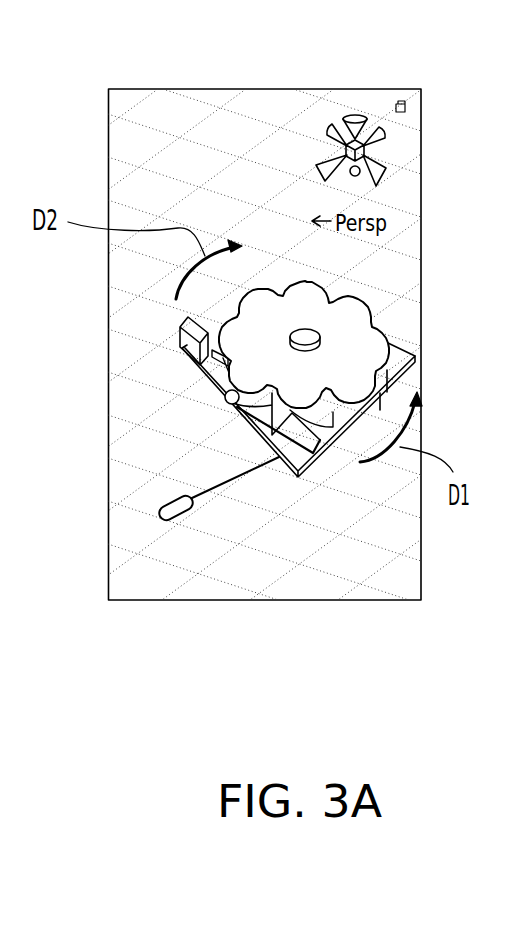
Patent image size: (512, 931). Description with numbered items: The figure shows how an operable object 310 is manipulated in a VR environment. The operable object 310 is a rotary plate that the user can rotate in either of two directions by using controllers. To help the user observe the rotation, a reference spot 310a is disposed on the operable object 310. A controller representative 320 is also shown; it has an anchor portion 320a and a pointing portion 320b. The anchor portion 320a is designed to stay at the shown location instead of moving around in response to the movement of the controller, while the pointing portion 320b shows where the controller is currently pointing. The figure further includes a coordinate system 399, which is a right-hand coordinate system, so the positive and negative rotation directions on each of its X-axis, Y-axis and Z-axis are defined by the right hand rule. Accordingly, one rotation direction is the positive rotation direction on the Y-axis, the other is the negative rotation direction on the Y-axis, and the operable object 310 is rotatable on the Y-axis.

The operable object 310 is at (307, 333).
The reference spot 310a is at (232, 404).
The controller representative 320 is at (268, 679).
The anchor portion 320a is at (180, 522).
The pointing portion 320b is at (220, 483).
The coordinate system 399 is at (376, 121).